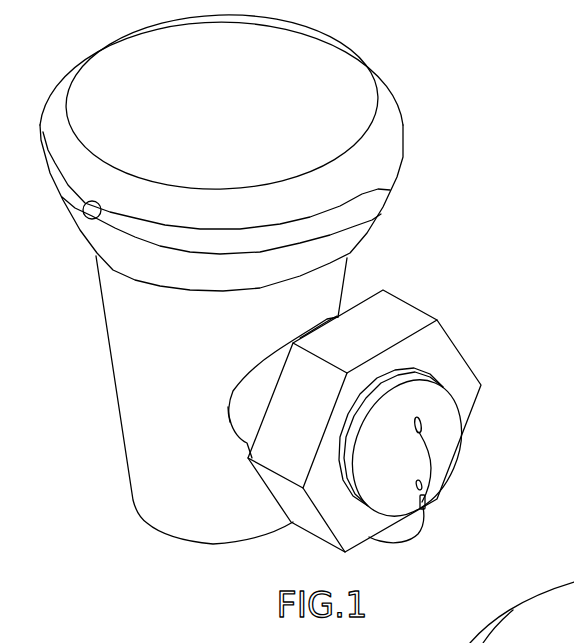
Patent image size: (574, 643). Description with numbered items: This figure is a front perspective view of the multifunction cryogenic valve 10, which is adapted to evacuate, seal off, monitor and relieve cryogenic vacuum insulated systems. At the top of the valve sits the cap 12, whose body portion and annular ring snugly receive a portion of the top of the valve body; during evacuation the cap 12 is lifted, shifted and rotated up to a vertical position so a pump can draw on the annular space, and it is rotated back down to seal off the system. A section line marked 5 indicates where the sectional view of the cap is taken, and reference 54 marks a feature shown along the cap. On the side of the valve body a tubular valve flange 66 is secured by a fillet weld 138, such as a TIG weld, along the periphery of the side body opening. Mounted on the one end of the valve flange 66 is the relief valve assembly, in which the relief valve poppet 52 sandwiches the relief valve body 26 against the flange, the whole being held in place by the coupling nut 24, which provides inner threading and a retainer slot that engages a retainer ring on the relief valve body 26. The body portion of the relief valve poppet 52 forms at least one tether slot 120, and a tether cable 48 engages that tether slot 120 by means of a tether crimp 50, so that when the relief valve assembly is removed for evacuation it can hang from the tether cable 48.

The multifunction cryogenic valve 10 is at (448, 78).
The cap 12 is at (118, 50).
The seam / weld bead 54 is at (347, 52).
The section line 5- 5 is at (20, 274).
The coupling nut 24 is at (391, 308).
The relief valve body 26 is at (343, 430).
The relief valve poppet 52 is at (452, 390).
The valve flange 66 is at (247, 388).
The fillet weld 138 is at (228, 420).
The tether slot 120 is at (420, 418).
The tether crimp 50 is at (419, 498).
The tether cable 48 is at (412, 542).